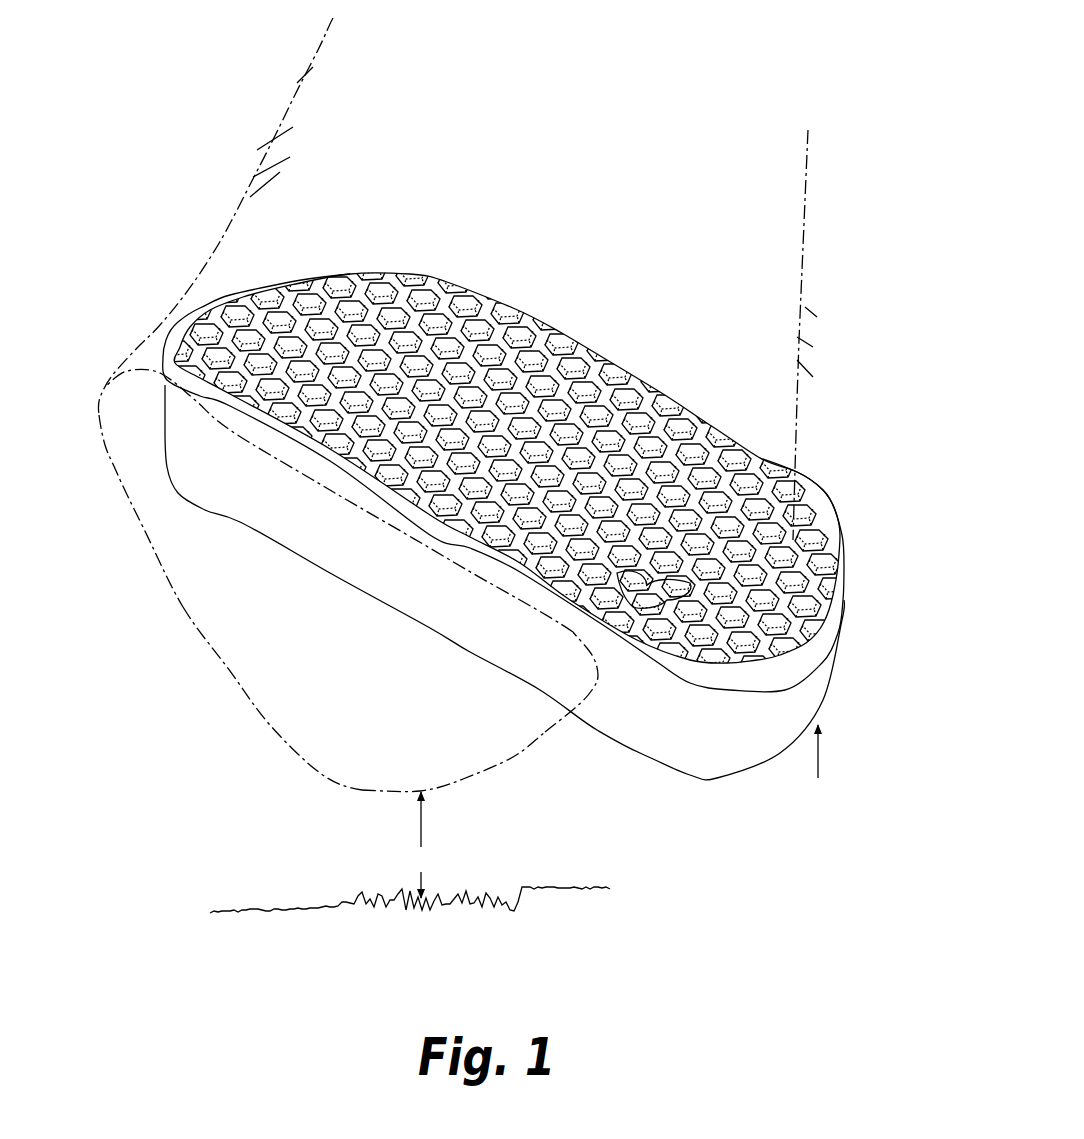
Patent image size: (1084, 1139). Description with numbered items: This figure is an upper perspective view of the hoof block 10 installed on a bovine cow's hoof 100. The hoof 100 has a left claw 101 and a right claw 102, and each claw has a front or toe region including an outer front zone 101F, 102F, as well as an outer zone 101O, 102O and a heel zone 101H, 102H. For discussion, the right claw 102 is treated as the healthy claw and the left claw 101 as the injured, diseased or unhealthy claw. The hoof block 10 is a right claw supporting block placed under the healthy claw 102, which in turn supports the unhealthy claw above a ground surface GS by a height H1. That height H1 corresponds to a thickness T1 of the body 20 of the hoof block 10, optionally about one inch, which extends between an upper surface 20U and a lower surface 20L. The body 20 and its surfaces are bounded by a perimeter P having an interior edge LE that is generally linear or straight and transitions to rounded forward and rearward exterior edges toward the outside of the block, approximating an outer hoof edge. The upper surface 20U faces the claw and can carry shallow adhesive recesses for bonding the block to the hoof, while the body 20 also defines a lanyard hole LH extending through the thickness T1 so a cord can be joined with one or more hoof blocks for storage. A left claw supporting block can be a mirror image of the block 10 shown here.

The hoof 100 is at (172, 198).
The left claw 101 is at (102, 454).
The outer front zone 101F is at (130, 527).
The outer zone 101O is at (307, 753).
The heel zone 101H is at (353, 785).
The hoof block 10 is at (858, 523).
The body 20 is at (848, 609).
The upper surface 20U is at (500, 328).
The lower surface 20L is at (717, 783).
The right claw 102 is at (187, 327).
The outer front zone 102F is at (318, 320).
The outer zone 102O is at (632, 384).
The heel zone 102H is at (800, 500).
The perimeter P is at (820, 680).
The thickness T1 is at (820, 763).
The height H1 is at (424, 845).
The lanyard hole LH is at (650, 605).
The interior edge LE is at (413, 548).
The ground surface GS is at (340, 910).